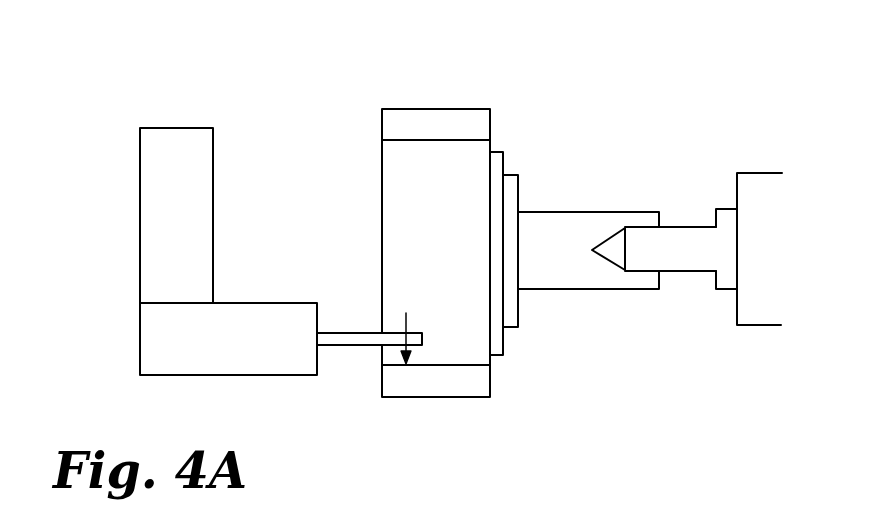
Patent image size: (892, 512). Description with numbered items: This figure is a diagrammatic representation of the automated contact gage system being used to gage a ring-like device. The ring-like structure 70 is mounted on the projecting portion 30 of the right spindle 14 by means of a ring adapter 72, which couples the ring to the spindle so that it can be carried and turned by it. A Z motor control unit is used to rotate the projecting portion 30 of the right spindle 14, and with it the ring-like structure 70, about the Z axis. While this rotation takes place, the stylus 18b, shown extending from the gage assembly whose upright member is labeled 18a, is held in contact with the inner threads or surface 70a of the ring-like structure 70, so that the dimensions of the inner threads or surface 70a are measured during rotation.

The right spindle 14 is at (751, 173).
The tool presetter column 18a is at (213, 172).
The stylus 18b is at (347, 333).
The projecting portion 30 is at (675, 227).
The ring-like structure 70 is at (458, 109).
The inner threads or surface 70a is at (457, 367).
The ring adapter 72 is at (615, 180).